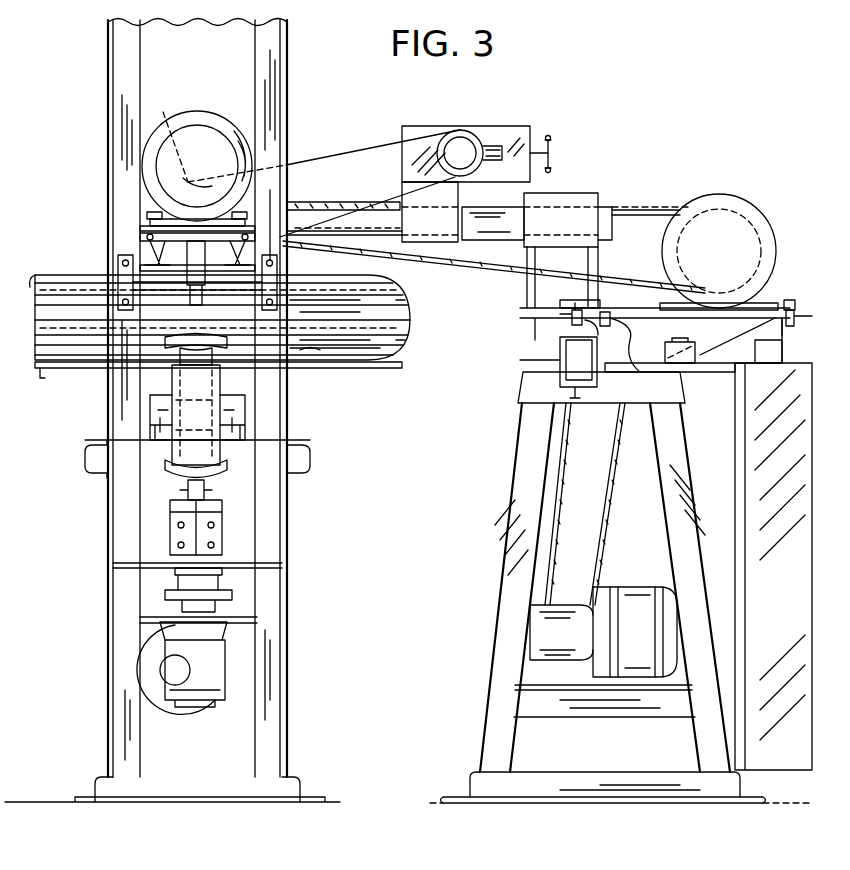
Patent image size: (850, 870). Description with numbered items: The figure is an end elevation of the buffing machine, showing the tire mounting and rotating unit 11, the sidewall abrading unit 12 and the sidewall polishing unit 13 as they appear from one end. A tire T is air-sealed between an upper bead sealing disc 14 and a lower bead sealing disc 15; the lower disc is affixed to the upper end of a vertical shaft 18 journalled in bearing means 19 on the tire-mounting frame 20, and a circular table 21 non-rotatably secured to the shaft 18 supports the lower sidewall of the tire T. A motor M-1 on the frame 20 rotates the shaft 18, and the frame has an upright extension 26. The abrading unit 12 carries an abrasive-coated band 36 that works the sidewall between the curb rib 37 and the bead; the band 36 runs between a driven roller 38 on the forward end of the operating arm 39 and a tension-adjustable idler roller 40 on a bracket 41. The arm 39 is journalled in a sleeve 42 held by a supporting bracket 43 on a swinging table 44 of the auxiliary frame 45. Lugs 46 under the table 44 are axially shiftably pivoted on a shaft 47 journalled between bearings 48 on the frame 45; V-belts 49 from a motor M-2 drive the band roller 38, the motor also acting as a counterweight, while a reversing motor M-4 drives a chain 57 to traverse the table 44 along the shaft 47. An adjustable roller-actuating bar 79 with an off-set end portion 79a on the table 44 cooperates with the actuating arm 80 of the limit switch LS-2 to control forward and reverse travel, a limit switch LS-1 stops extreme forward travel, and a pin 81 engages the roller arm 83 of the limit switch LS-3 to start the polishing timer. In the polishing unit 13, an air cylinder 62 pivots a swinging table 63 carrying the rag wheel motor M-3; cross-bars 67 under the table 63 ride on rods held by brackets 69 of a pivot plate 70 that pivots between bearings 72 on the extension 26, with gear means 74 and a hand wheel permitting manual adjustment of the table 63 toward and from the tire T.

The tire mounting and rotating unit 11 is at (70, 372).
The sidewall abrading unit 12 is at (416, 120).
The sidewall polishing unit 13 is at (256, 131).
The upper tire bead sealing disc 14 is at (322, 283).
The lower tire bead sealing disc 15 is at (310, 352).
The vertical shaft 18 is at (222, 393).
The bearing means 19 is at (248, 416).
The tire-mounting frame 20 is at (108, 590).
The circular table 21 is at (380, 368).
The upright extension 26 is at (272, 97).
The abrasive-coated band 36 is at (333, 150).
The annular curb rib 37 is at (38, 278).
The driven roller 38 is at (169, 135).
The operating arm 39 is at (365, 230).
The idler roller 40 is at (465, 138).
The bracket 41 is at (534, 127).
The sleeve 42 is at (514, 242).
The supporting bracket 43 is at (585, 212).
The swinging table 44 is at (645, 298).
The auxiliary frame 45 is at (510, 548).
The lugs 46 is at (745, 318).
The shaft 47 is at (600, 345).
The bearings 48 is at (612, 320).
The V-belts 49 is at (445, 268).
The chain 57 is at (595, 545).
The air cylinder 62 is at (228, 455).
The swinging table 63 is at (285, 210).
The cross-bars 67 is at (135, 228).
The brackets 69 is at (158, 242).
The pivot plate 70 is at (160, 284).
The bearings 72 is at (122, 258).
The gear means 74 is at (222, 187).
The roller-actuating bar 79 is at (796, 314).
The off-set end portion 79a is at (793, 298).
The actuating arm 80 is at (784, 322).
The pin 81 is at (585, 313).
The roller arm 83 is at (634, 342).
The motor M-1 is at (185, 712).
The motor M-2 is at (716, 195).
The motor M-3 is at (240, 125).
The reversing motor M-4 is at (630, 587).
The limit switch LS-1 is at (686, 365).
The limit switch LS-2 is at (750, 350).
The limit switch LS-3 is at (568, 358).
The tire T is at (412, 330).